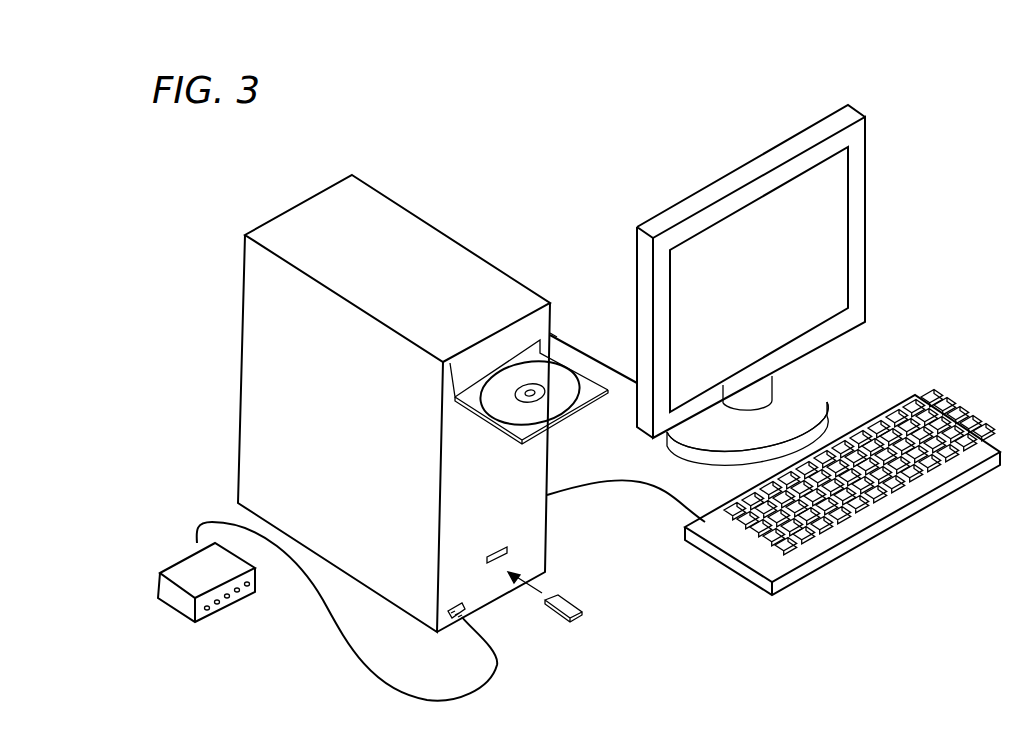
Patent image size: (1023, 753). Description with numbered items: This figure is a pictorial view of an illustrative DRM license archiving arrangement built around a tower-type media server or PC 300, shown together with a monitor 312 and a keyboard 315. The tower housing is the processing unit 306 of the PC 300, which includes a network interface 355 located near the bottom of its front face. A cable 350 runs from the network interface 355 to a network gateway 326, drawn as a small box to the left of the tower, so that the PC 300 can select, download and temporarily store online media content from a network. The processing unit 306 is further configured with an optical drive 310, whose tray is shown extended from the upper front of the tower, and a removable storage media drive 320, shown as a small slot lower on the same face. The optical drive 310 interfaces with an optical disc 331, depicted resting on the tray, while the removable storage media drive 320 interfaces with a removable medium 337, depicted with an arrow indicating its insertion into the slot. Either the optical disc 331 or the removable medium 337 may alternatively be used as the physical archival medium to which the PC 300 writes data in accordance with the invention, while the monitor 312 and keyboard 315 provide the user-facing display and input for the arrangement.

The tower-type media server or PC 300 is at (475, 153).
The processing unit 306 is at (507, 268).
The optical drive 310 is at (455, 390).
The monitor 312 is at (678, 200).
The keyboard 315 is at (736, 575).
The removable storage media drive 320 is at (487, 558).
The network gateway 326 is at (178, 615).
The optical disc 331 is at (497, 368).
The removable medium 337 is at (550, 608).
The cable 350 is at (345, 640).
The network interface 355 is at (452, 622).